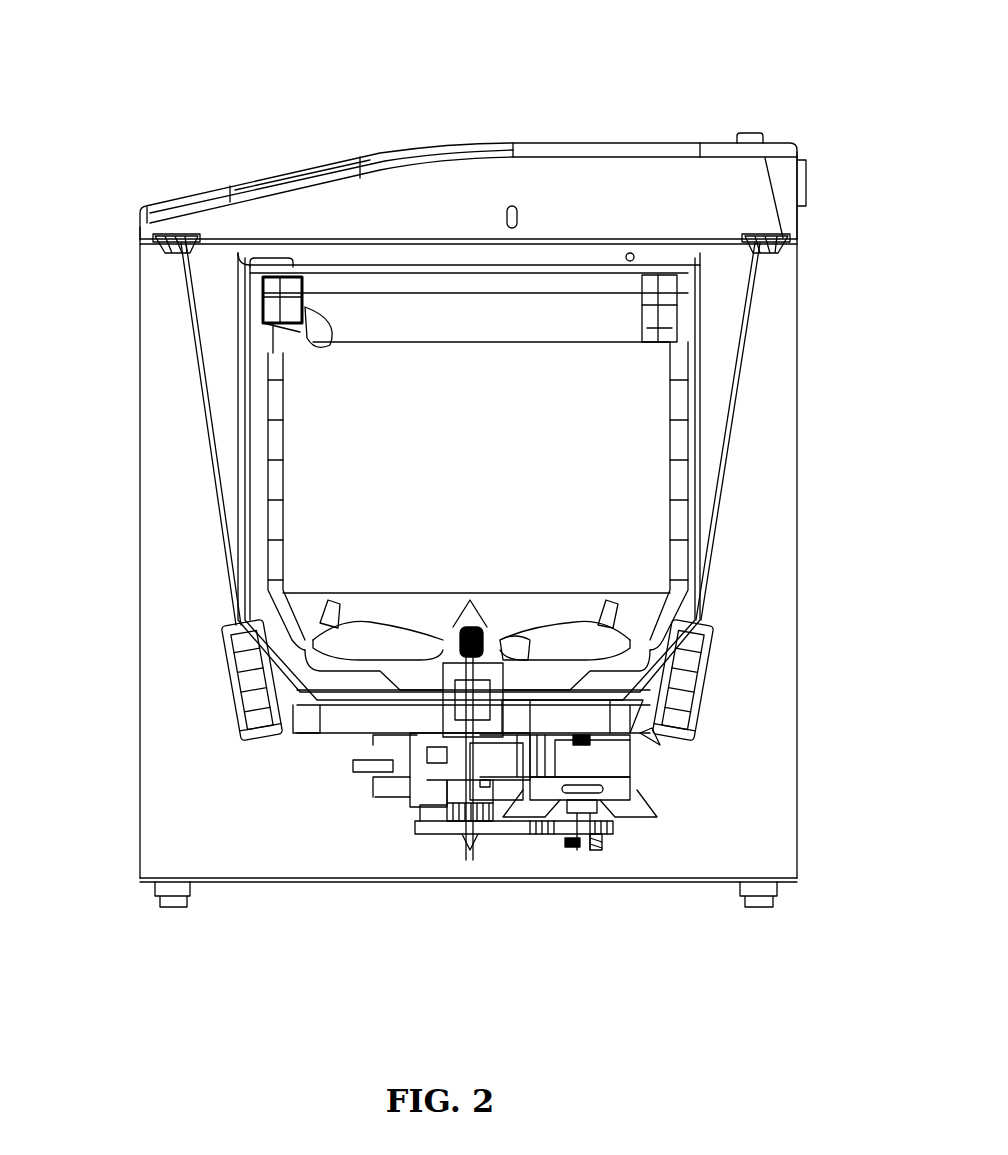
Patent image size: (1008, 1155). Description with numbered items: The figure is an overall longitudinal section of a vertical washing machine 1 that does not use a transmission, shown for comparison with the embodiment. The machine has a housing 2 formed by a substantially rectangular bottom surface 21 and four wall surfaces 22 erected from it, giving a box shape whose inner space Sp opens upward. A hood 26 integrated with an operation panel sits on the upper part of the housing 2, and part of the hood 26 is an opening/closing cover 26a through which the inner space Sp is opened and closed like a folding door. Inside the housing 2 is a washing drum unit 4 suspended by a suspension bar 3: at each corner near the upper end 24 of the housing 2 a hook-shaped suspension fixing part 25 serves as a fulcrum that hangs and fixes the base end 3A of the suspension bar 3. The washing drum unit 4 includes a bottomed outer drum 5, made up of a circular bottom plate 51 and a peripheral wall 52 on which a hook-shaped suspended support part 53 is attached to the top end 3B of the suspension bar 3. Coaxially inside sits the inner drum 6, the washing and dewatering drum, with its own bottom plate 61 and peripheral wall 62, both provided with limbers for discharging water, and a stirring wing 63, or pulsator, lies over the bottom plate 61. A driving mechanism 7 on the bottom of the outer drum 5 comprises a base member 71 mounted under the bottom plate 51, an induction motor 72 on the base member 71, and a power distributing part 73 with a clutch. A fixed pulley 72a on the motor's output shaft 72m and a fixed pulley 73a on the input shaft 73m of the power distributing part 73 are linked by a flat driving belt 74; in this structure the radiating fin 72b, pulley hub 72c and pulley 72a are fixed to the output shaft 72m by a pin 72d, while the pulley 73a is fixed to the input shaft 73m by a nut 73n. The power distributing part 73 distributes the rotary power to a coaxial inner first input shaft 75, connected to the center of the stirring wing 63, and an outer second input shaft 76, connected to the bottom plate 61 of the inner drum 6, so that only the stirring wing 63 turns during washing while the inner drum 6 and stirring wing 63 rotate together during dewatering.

The washing machine 1 is at (150, 82).
The housing 2 is at (462, 553).
The bottom surface 21 is at (450, 884).
The wall surfaces 22 is at (140, 822).
The upper end 24 is at (572, 240).
The suspension fixing part 25 is at (153, 243).
The hood 26 is at (718, 135).
The opening/closing cover 26a is at (455, 145).
The suspension bar 3 is at (222, 525).
The base end 3A is at (160, 250).
The top end 3B is at (700, 736).
The washing drum unit 4 is at (473, 151).
The outer drum 5 is at (385, 517).
The bottom plate 51 is at (300, 716).
The peripheral wall 52 is at (263, 325).
The suspended support part 53 is at (215, 632).
The inner drum 6 is at (387, 532).
The bottom plate 61 is at (355, 690).
The peripheral wall 62 is at (276, 395).
The stirring wing 63 is at (380, 625).
The driving mechanism 7 is at (528, 848).
The base member 71 is at (632, 718).
The motor 72 is at (602, 856).
The fixed pulley 72a is at (598, 842).
The radiating fin 72b is at (648, 806).
The pulley hub 72c is at (588, 844).
The pin 72d is at (574, 846).
The output shaft 72m is at (592, 856).
The power distributing part 73 is at (360, 847).
The fixed pulley 73a is at (420, 838).
The input shaft 73m is at (475, 846).
The nut 73n is at (445, 826).
The driving belt 74 is at (530, 850).
The first input shaft 75 is at (465, 625).
The second input shaft 76 is at (522, 642).
The inner space Sp is at (330, 852).